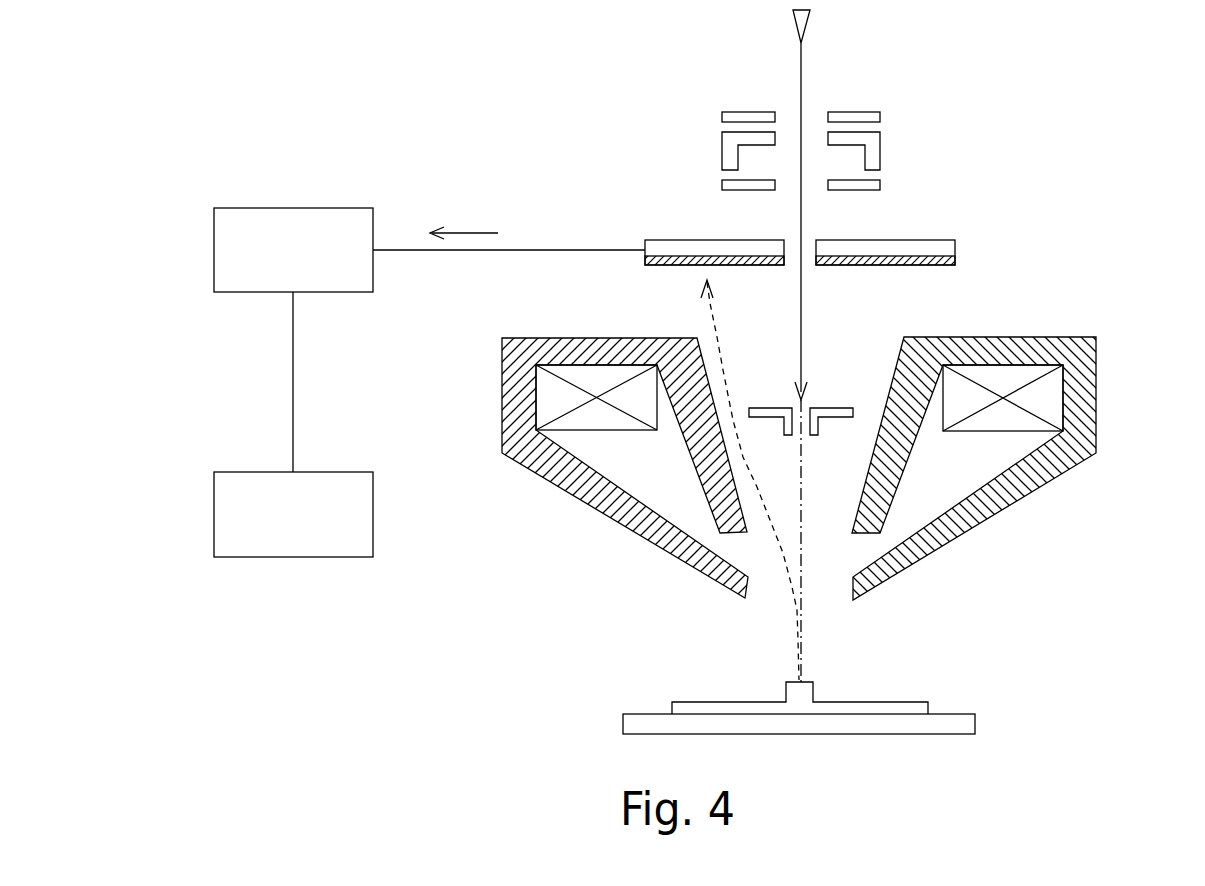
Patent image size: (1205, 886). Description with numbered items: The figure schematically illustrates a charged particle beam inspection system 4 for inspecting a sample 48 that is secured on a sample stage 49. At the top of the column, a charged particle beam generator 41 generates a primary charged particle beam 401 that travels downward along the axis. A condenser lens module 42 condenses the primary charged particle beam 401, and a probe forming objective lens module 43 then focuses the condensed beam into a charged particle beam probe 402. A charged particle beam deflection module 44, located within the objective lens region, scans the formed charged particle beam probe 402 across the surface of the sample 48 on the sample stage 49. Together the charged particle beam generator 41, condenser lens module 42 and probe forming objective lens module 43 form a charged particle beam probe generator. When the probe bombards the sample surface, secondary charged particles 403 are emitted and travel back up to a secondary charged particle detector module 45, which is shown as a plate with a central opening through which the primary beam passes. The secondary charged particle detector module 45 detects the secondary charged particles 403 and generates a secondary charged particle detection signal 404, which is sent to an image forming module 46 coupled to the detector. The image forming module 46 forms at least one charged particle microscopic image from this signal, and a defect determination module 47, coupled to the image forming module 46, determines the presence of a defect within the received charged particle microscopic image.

The charged particle beam inspection system 4 is at (272, 83).
The charged particle beam generator 41 is at (900, 28).
The condenser lens module 42 is at (876, 160).
The probe forming objective lens module 43 is at (1096, 378).
The charged particle beam deflection module 44 is at (847, 408).
The secondary charged particle detector module 45 is at (955, 250).
The image forming module 46 is at (311, 267).
The defect determination module 47 is at (311, 531).
The sample 48 is at (928, 710).
The sample stage 49 is at (975, 726).
The primary charged particle beam 401 is at (805, 222).
The charged particle beam probe 402 is at (802, 598).
The secondary charged particles 403 is at (710, 327).
The secondary charged particle detection signal 404 is at (509, 233).